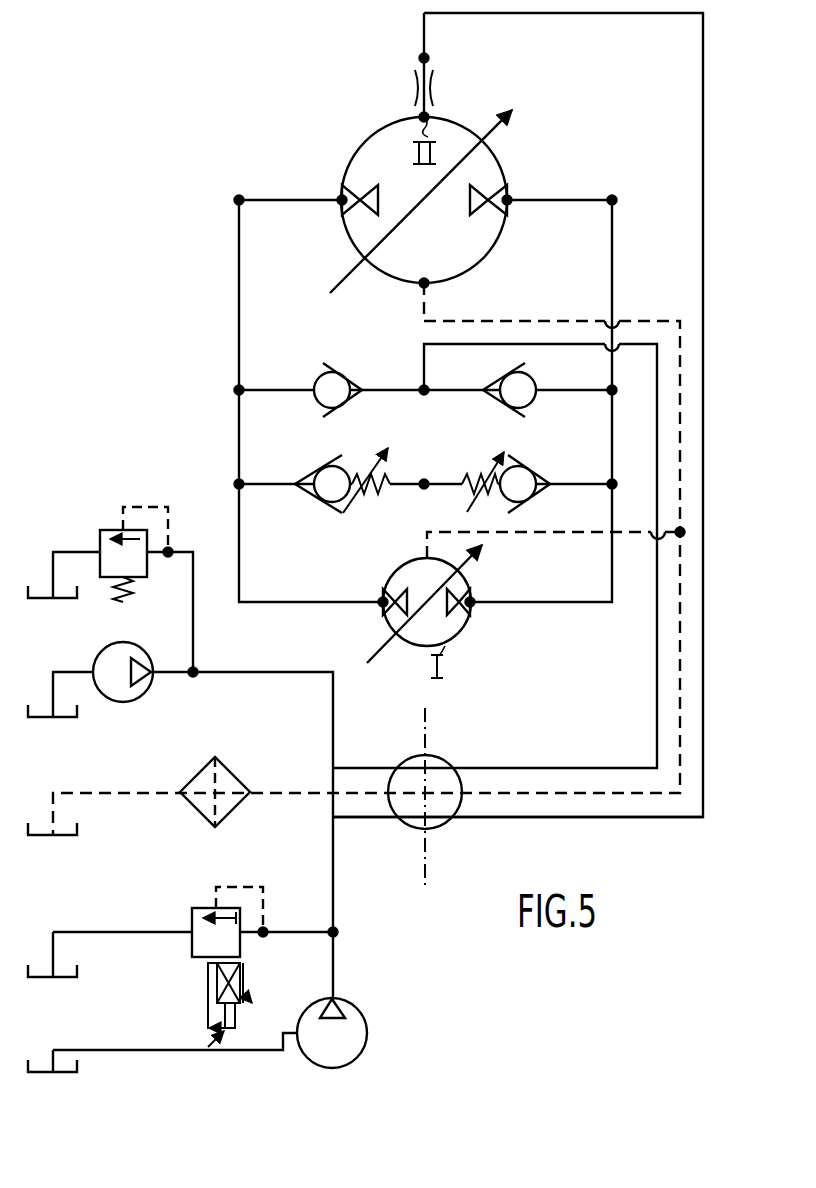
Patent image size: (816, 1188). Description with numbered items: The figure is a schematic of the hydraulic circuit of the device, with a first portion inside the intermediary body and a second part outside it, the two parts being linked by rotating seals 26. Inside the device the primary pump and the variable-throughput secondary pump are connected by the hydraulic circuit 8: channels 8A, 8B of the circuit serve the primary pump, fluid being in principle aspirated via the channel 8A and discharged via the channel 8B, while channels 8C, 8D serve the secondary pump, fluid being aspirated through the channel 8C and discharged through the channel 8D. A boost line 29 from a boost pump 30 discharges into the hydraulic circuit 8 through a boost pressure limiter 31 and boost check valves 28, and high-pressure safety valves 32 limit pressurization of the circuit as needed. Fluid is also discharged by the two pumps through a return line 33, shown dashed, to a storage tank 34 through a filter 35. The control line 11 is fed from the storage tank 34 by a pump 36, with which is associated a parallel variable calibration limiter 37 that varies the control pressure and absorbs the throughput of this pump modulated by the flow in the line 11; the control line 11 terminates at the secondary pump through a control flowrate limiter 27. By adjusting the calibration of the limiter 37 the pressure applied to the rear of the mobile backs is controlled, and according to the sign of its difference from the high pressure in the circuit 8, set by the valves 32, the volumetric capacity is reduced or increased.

The hydraulic circuit 8 is at (226, 351).
The channel 8A is at (377, 593).
The channel 8B is at (476, 593).
The channel 8C is at (308, 186).
The channel 8D is at (541, 191).
The control line 11 is at (703, 123).
The rotating seals 26 is at (415, 755).
The control flowrate limiter 27 is at (442, 67).
The boost check valves 28 is at (352, 380).
The boost line 29 is at (658, 730).
The boost pump 30 is at (147, 644).
The boost pressure limiter 31 is at (114, 528).
The high-pressure safety valves 32 is at (317, 460).
The return line 33 is at (682, 633).
The storage tank 34 is at (66, 599).
The filter 35 is at (202, 766).
The pump 36 is at (361, 1056).
The variable calibration limiter 37 is at (192, 920).